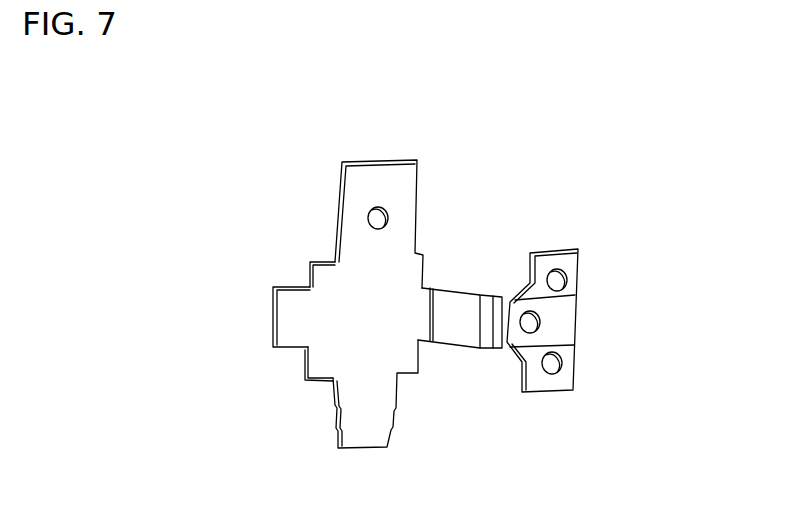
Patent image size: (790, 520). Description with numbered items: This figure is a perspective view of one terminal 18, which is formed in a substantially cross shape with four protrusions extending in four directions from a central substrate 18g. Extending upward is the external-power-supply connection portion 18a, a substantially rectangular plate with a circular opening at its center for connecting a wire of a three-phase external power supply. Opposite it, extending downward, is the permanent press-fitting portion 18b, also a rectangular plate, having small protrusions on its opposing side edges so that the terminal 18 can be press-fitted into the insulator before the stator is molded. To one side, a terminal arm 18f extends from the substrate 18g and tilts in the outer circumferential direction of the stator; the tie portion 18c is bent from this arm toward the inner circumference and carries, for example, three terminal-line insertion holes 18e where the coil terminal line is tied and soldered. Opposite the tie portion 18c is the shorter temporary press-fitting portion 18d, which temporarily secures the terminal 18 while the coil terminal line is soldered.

The terminal 18 is at (208, 207).
The external-power-supply connection portion 18a is at (340, 185).
The permanent press-fitting portion 18b is at (365, 447).
The tie portion 18c is at (577, 315).
The temporary press-fitting portion 18d is at (270, 318).
The terminal-line insertion hole 18e is at (560, 266).
The terminal arm 18f is at (455, 305).
The substrate 18g is at (345, 333).